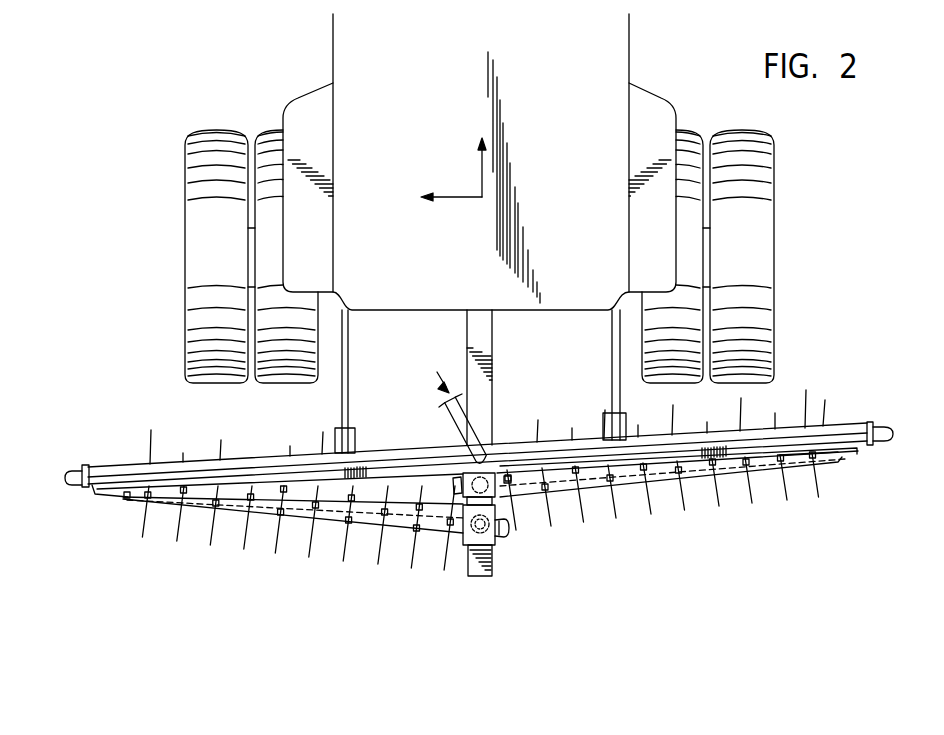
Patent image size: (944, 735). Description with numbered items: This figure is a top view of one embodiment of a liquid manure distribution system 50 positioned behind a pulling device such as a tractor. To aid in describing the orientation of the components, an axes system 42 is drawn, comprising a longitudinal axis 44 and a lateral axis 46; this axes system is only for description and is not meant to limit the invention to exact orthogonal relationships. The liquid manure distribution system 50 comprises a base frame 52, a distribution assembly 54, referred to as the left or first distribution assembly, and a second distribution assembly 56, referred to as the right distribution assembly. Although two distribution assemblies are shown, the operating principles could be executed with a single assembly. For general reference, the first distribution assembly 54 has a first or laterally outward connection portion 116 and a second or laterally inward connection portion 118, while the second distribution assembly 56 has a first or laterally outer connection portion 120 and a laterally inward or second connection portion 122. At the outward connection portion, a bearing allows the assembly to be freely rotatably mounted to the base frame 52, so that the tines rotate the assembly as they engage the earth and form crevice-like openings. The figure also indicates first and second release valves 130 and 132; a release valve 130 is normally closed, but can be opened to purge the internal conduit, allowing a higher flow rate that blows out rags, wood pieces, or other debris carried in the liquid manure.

The axes system 42 is at (463, 177).
The longitudinal axis 44 is at (481, 161).
The lateral axis 46 is at (478, 197).
The liquid manure distribution system 50 is at (90, 395).
The base frame 52 is at (780, 456).
The distribution assembly 54 is at (277, 563).
The second distribution assembly 56 is at (701, 520).
The first connection portion 116 is at (170, 499).
The second connection portion 118 is at (522, 556).
The first connection portion 120 is at (826, 424).
The second connection portion 122 is at (510, 494).
The first release valve 130 is at (509, 529).
The second release valve 132 is at (443, 457).